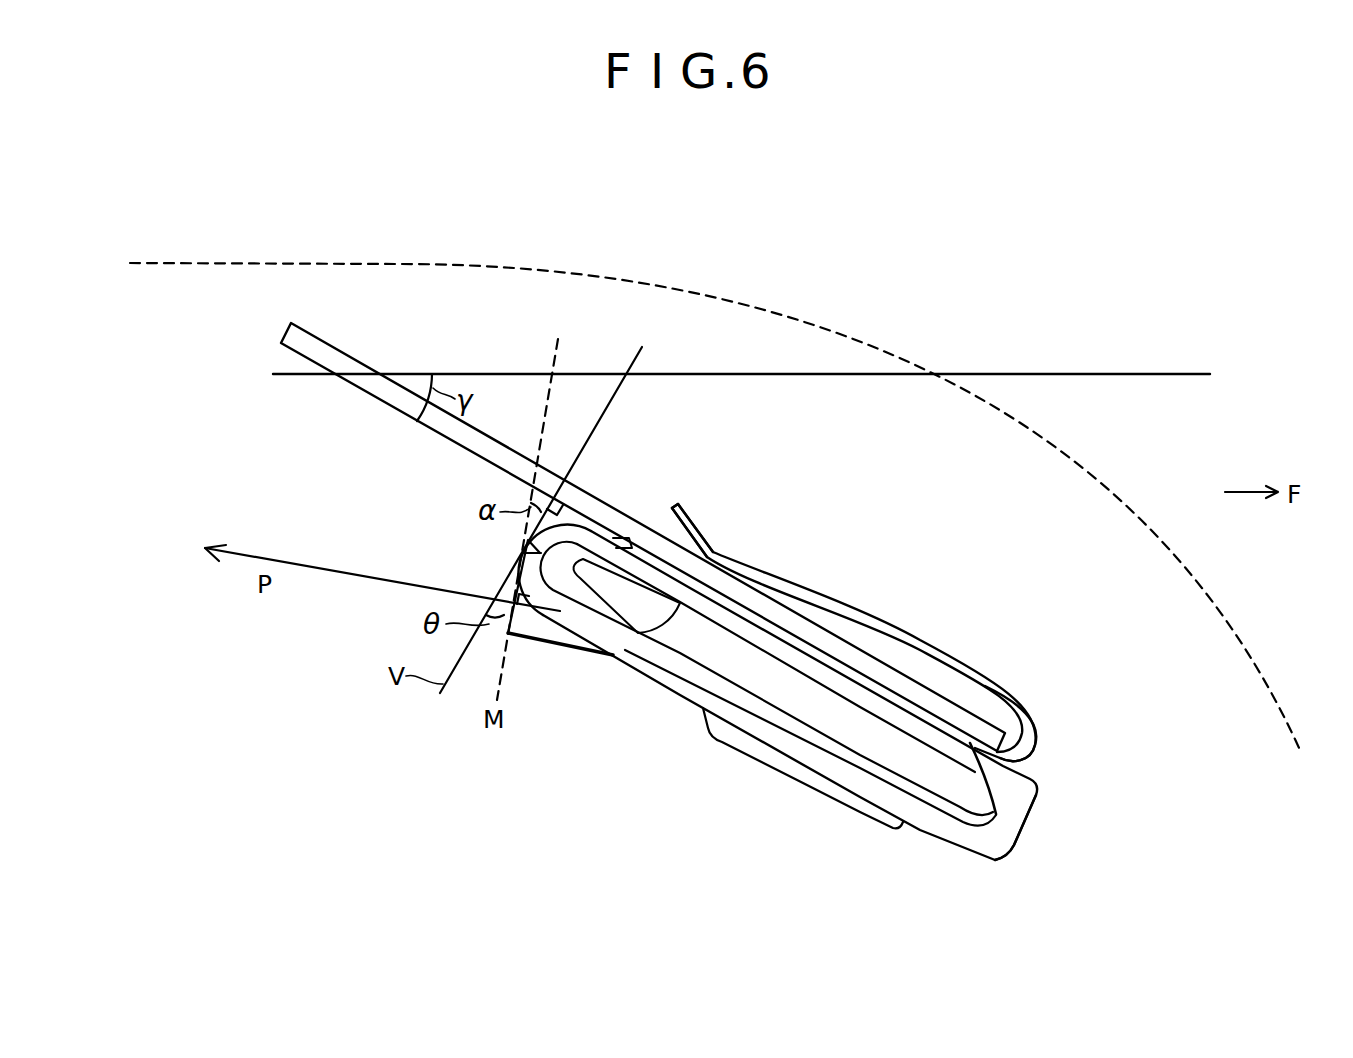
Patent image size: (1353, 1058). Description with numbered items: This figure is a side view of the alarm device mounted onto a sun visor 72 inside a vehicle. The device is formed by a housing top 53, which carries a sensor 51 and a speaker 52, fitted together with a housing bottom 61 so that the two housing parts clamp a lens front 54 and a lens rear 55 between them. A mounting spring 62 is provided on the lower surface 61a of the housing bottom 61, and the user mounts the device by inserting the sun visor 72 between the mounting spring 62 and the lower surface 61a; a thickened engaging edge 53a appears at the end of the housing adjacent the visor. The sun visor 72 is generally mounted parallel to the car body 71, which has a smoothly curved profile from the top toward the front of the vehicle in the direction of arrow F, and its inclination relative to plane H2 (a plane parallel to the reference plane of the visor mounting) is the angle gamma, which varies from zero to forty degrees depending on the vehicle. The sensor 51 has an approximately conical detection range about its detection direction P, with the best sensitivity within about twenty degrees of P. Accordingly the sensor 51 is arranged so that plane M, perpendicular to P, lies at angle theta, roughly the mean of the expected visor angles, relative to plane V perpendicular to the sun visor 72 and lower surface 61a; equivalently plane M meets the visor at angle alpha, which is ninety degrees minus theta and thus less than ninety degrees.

The sensor 51 is at (511, 575).
The speaker 52 is at (799, 784).
The housing top 53 is at (993, 852).
The engaging piece 53a is at (566, 634).
The lens front 54 is at (566, 556).
The lens rear 55 is at (1020, 818).
The housing bottom 61 is at (1027, 791).
The lower surface 61a is at (757, 574).
The mounting spring 62 is at (1040, 733).
The car body 71 is at (1244, 633).
The sun visor 72 is at (935, 700).
The plane H2 is at (1140, 378).